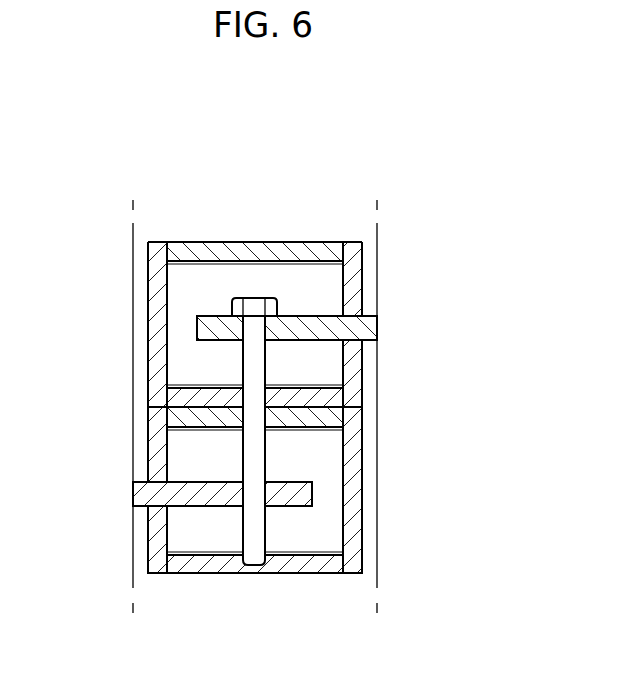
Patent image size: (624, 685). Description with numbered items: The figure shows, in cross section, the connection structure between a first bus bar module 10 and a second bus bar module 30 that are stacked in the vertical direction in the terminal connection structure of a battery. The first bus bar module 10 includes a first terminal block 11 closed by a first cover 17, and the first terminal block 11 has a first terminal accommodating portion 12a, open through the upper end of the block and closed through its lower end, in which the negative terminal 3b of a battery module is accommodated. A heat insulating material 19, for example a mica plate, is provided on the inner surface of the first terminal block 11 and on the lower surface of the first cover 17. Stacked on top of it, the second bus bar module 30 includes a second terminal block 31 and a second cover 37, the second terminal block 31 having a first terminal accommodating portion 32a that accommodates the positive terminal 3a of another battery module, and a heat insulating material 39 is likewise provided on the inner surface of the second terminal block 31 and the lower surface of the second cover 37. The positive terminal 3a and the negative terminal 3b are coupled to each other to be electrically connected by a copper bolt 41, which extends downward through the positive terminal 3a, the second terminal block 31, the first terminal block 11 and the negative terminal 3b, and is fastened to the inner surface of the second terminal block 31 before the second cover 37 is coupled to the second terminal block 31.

The first bus bar module 10 is at (312, 443).
The first terminal block 11 is at (353, 450).
The first terminal accommodating portion 12a is at (307, 537).
The first cover 17 is at (187, 417).
The heat insulating material 19 is at (192, 552).
The second bus bar module 30 is at (312, 374).
The second terminal block 31 is at (352, 367).
The first terminal accommodating portion 32a is at (203, 281).
The second cover 37 is at (234, 252).
The heat insulating material 39 is at (187, 384).
The copper bolt 41 is at (253, 306).
The positive terminal 3a is at (304, 326).
The negative terminal 3b is at (217, 495).